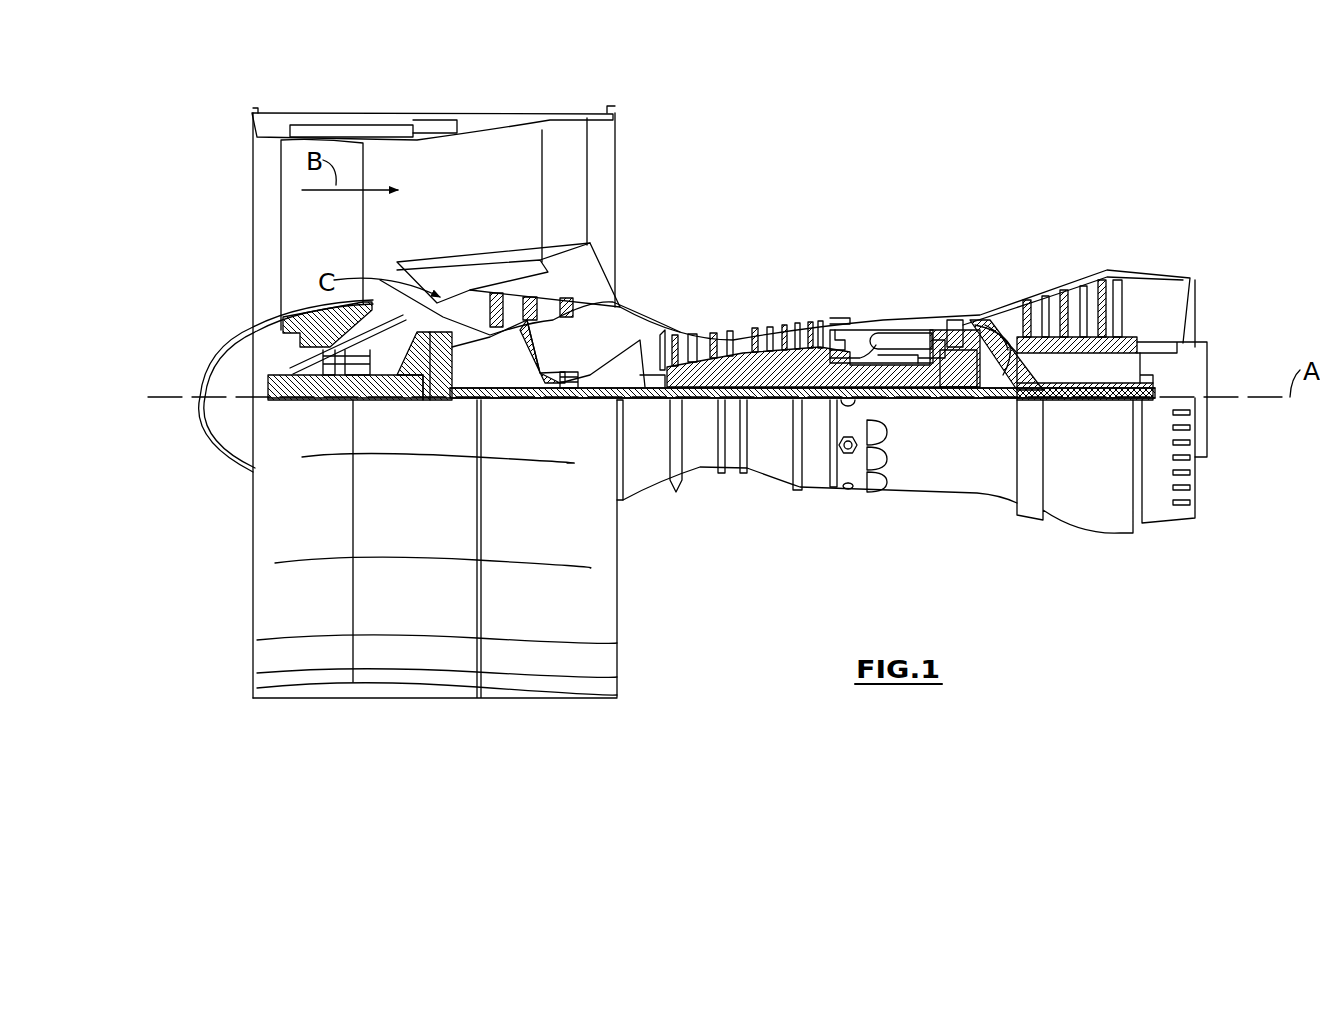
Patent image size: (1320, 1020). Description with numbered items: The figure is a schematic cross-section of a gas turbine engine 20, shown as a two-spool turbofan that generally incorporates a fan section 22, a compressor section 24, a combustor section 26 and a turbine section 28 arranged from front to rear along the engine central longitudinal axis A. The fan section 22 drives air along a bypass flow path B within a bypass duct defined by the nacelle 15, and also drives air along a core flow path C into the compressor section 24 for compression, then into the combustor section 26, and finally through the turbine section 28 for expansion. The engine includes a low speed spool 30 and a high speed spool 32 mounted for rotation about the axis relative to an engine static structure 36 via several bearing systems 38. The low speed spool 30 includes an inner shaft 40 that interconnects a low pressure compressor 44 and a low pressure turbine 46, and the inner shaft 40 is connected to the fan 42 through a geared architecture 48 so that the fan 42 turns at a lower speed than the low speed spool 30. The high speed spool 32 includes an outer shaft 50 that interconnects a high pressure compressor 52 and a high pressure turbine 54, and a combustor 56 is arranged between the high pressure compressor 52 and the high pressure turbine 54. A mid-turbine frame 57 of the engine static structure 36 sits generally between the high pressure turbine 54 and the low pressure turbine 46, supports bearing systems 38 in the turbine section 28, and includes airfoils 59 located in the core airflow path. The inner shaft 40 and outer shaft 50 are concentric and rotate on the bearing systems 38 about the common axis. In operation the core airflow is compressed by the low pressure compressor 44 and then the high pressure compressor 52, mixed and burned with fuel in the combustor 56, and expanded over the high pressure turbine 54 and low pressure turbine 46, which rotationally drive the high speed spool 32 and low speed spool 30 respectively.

The gas turbine engine 20 is at (899, 163).
The nacelle 15 is at (436, 120).
The fan section 22 is at (362, 104).
The compressor section 24 is at (668, 304).
The combustor section 26 is at (889, 293).
The turbine section 28 is at (1038, 255).
The low speed spool 30 is at (772, 403).
The high speed spool 32 is at (812, 347).
The engine static structure 36 is at (815, 490).
The bearing systems 38 is at (573, 388).
The inner shaft 40 is at (632, 400).
The fan 42 is at (338, 242).
The low pressure compressor 44 is at (540, 306).
The low pressure turbine 46 is at (1078, 272).
The geared architecture 48 is at (438, 378).
The outer shaft 50 is at (905, 386).
The high pressure compressor 52 is at (748, 370).
The high pressure turbine 54 is at (954, 322).
The combustor 56 is at (890, 338).
The mid-turbine frame 57 is at (998, 300).
The airfoils 59 is at (997, 333).